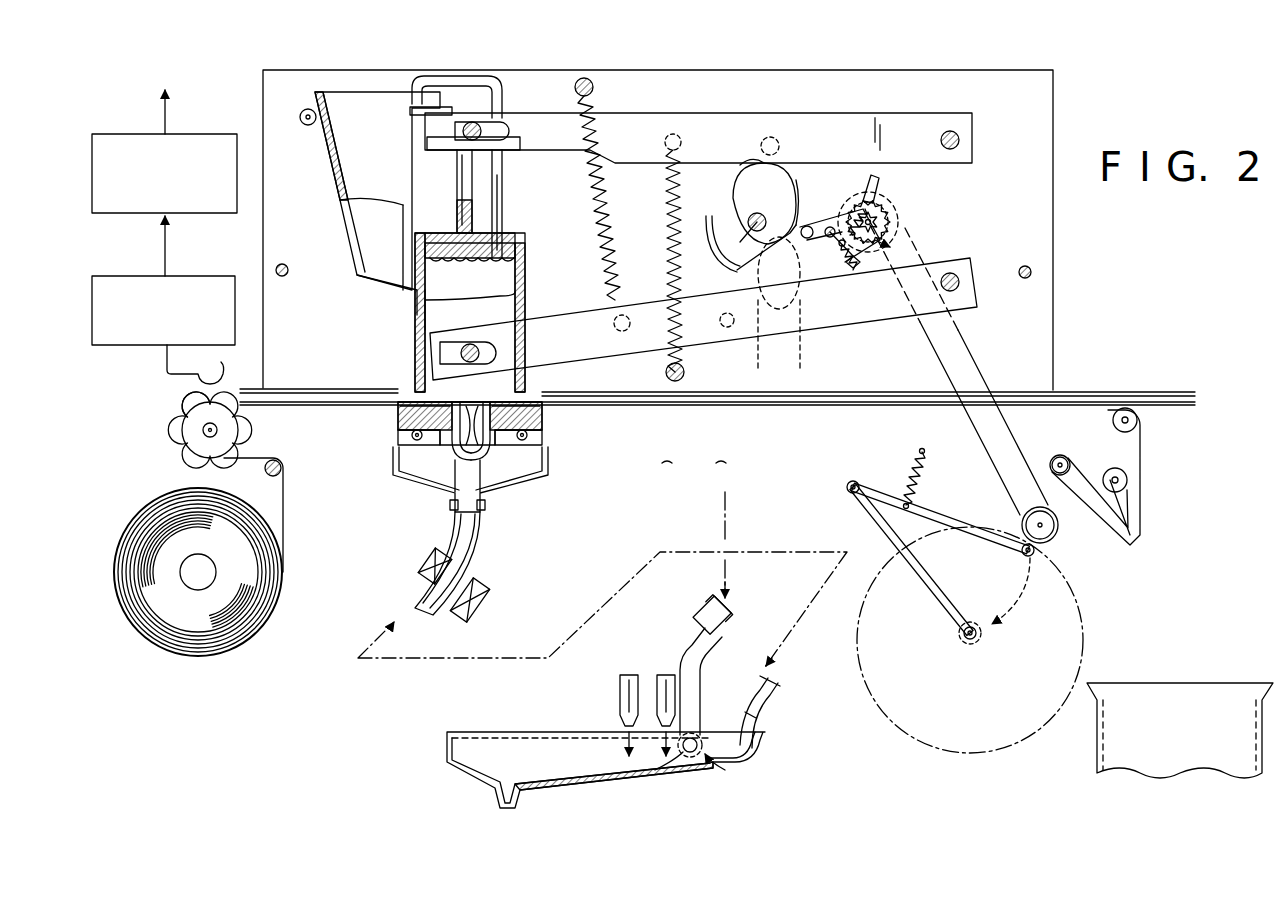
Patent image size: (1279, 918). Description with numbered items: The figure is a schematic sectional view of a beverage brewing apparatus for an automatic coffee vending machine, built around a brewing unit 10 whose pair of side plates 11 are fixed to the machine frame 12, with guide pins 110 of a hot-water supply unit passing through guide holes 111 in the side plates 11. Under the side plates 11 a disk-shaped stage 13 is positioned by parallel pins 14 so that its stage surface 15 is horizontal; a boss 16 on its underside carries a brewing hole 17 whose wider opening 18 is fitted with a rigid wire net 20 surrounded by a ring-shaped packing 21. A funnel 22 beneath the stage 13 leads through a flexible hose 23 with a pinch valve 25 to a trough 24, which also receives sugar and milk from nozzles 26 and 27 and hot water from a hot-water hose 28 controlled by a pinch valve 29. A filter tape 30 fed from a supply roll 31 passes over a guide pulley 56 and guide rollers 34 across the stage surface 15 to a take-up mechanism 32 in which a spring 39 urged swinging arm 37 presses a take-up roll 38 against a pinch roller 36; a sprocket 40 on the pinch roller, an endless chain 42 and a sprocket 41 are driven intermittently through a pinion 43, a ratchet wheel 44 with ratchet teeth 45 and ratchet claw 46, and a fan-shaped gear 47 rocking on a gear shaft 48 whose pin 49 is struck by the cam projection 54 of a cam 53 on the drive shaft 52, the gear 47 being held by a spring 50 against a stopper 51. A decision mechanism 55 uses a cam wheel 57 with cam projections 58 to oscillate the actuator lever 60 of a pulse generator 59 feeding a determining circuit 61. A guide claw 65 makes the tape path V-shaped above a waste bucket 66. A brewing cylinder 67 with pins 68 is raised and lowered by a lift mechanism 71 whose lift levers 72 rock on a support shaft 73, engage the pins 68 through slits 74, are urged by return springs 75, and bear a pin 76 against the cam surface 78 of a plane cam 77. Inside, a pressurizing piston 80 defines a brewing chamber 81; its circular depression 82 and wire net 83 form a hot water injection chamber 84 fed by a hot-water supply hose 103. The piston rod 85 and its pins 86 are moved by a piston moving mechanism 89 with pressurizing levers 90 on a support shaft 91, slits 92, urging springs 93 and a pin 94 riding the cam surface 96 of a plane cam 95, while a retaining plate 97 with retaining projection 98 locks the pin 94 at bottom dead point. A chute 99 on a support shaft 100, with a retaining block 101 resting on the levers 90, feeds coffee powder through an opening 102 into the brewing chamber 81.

The brewing unit 10 is at (1098, 330).
The side plates 11 is at (1055, 211).
The frame 12 is at (694, 463).
The stage 13 is at (375, 423).
The parallel pins 14 is at (410, 440).
The stage surface 15 is at (545, 410).
The boss 16 is at (444, 465).
The brewing hole 17 is at (485, 448).
The opening 18 is at (450, 450).
The wire net 20 is at (471, 449).
The ring-shaped packing 21 is at (393, 408).
The funnel 22 is at (545, 462).
The flexible hose 23 is at (473, 545).
The trough 24 is at (632, 780).
The pinch valve 25 is at (456, 598).
The nozzle 26 is at (620, 692).
The nozzle 27 is at (654, 684).
The hot-water hose 28 is at (683, 650).
The pinch valve 29 is at (706, 622).
The filter tape 30 is at (622, 437).
The supply roll 31 is at (206, 656).
The take-up mechanism 32 is at (882, 448).
The guide rollers 34 is at (283, 470).
The pinch roller 36 is at (1054, 548).
The swinging arm 37 is at (933, 514).
The take-up roll 38 is at (1032, 556).
The urging spring 39 is at (904, 475).
The sprocket 40 is at (1060, 530).
The sprocket 41 is at (896, 237).
The endless chain 42 is at (986, 364).
The pinion 43 is at (889, 219).
The ratchet wheel 44 is at (878, 210).
The ratchet teeth 45 is at (895, 215).
The ratchet claw 46 is at (870, 188).
The fan-shaped gear 47 is at (840, 211).
The gear shaft 48 is at (828, 264).
The pin 49 is at (780, 273).
The spring 50 is at (854, 264).
The stopper 51 is at (870, 264).
The drive shaft 52 is at (741, 219).
The cam 53 is at (804, 226).
The cam projection 54 is at (780, 335).
The decision mechanism 55 is at (114, 395).
The guide pulley 56 is at (182, 433).
The cam wheel 57 is at (170, 418).
The cam projections 58 is at (166, 408).
The pulse generator 59 is at (223, 276).
The actuator lever 60 is at (226, 378).
The determining circuit 61 is at (228, 134).
The guide claw 65 is at (1140, 515).
The waste bucket 66 is at (1166, 692).
The brewing cylinder 67 is at (414, 325).
The pins 68 is at (489, 356).
The lift mechanism 71 is at (813, 396).
The lift levers 72 is at (639, 344).
The support shaft 73 is at (964, 280).
The slit 74 is at (432, 364).
The return spring 75 is at (601, 238).
The pin 76 is at (752, 346).
The plane cam 77 is at (740, 275).
The cam surface 78 is at (730, 334).
The pressurizing piston 80 is at (452, 240).
The brewing chamber 81 is at (420, 295).
The circular depression 82 is at (458, 260).
The wire net 83 is at (494, 260).
The hot water injection chamber 84 is at (508, 241).
The piston rod 85 is at (466, 180).
The pins 86 is at (497, 128).
The piston moving mechanism 89 is at (812, 100).
The pressurizing levers 90 is at (712, 132).
The support shaft 91 is at (950, 130).
The slit 92 is at (430, 140).
The urging spring 93 is at (673, 221).
The pin 94 is at (775, 145).
The plane cam 95 is at (740, 186).
The cam surface 96 is at (798, 195).
The retaining plate 97 is at (727, 219).
The retaining projection 98 is at (713, 256).
The chute 99 is at (350, 212).
The support shaft 100 is at (307, 124).
The retaining block 101 is at (416, 94).
The opening 102 is at (384, 260).
The hot-water supply hose 103 is at (502, 164).
The guide pins 110 is at (282, 276).
The guide holes 111 is at (286, 265).